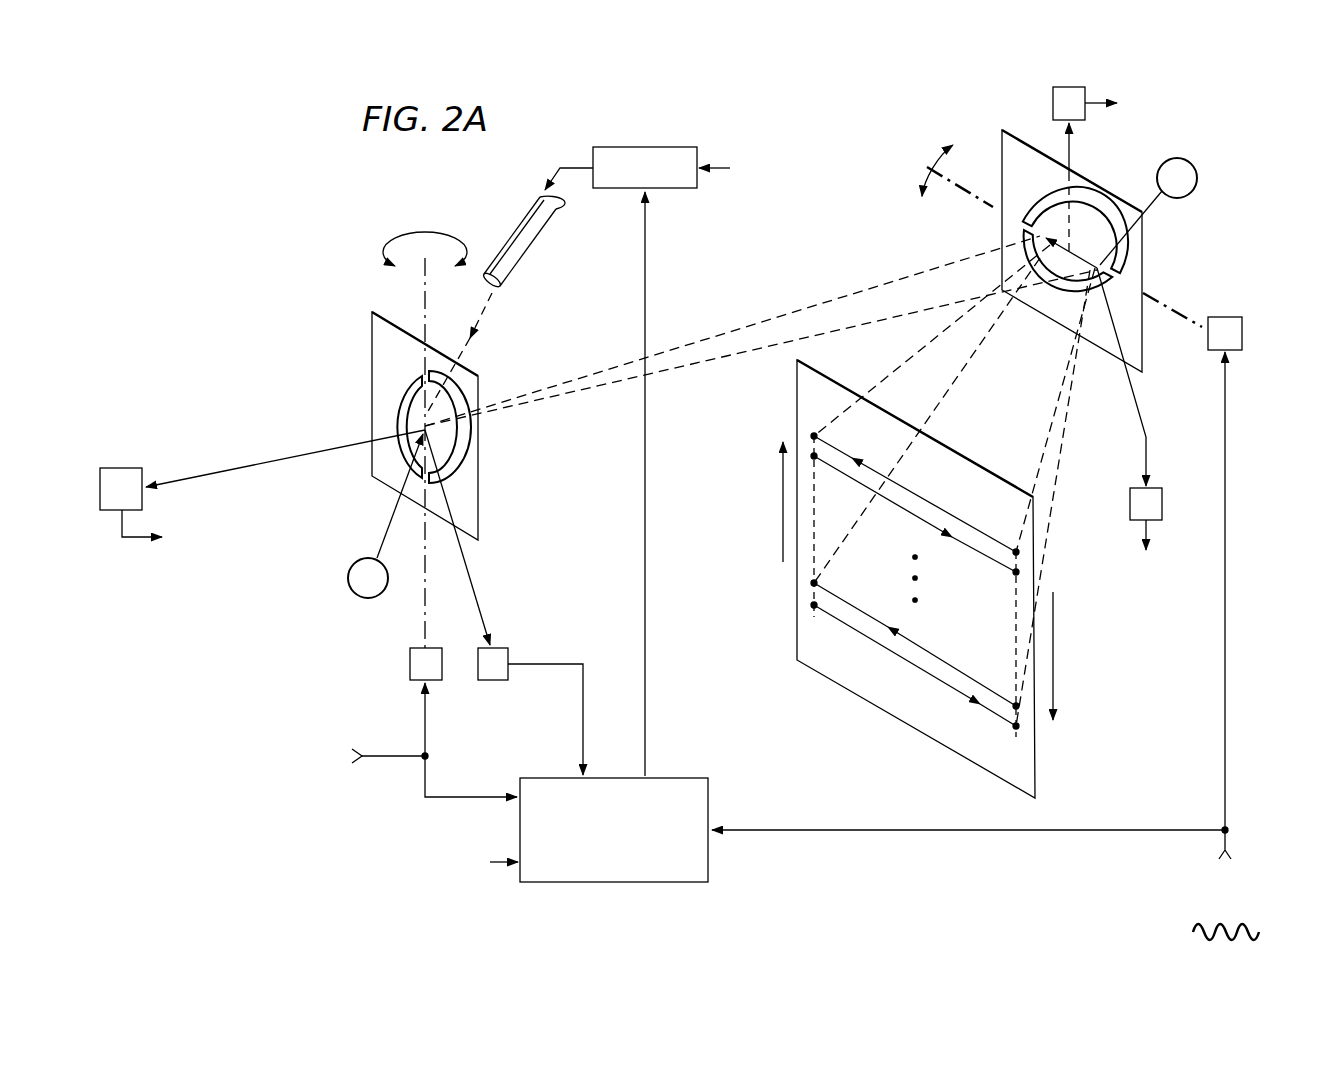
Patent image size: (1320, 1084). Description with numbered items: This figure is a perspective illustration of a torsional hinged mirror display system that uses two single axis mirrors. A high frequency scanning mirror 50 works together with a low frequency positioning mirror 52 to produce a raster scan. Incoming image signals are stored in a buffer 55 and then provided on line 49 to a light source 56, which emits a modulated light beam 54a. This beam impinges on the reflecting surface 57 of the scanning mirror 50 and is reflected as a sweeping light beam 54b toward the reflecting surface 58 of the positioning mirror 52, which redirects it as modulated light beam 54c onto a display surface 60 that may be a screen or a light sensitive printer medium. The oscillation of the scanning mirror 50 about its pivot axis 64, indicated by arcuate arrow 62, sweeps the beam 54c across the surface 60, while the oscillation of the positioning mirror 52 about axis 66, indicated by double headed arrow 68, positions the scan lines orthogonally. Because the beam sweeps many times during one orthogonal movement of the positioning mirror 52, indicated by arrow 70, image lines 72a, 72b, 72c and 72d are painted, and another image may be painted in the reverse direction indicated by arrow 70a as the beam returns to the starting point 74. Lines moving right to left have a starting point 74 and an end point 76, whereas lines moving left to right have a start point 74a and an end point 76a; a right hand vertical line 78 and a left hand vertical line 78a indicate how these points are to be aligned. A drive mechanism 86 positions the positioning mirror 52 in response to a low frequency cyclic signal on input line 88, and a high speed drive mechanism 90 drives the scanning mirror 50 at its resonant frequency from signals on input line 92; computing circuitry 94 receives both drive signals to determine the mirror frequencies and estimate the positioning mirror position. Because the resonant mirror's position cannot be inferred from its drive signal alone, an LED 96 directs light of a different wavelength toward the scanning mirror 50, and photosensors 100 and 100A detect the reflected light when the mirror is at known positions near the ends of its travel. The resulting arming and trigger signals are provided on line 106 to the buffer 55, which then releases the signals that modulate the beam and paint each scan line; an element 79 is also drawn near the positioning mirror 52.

The line 49 is at (577, 165).
The high frequency scanning single axis torsional hinged mirror 50 is at (343, 348).
The low frequency positioning single axis torsional hinged mirror 52 is at (1162, 252).
The light beam 54a is at (498, 298).
The sweeping light beam 54b is at (812, 305).
The modulated light beam 54c is at (890, 366).
The buffer 55 is at (633, 147).
The light source 56 is at (505, 233).
The reflecting surface 57 is at (405, 410).
The reflecting surface 58 is at (1095, 210).
The display surface 60 is at (880, 690).
The arcuate arrow 62 is at (403, 237).
The pivot axis 64 is at (428, 318).
The axis 66 is at (983, 205).
The double headed arrow 68 is at (935, 133).
The arrow 70 is at (1056, 672).
The arrow 70a is at (782, 485).
The image line 72a is at (920, 492).
The image line 72b is at (915, 516).
The image line 72c is at (862, 614).
The image line 72d is at (893, 655).
The starting point 74 is at (1012, 548).
The start point 74a is at (818, 460).
The end point 76 is at (820, 436).
The end point 76a is at (1012, 575).
The right hand vertical line 78 is at (1012, 612).
The left hand vertical line 78a is at (812, 566).
The low speed position sensor beam 79 is at (1052, 192).
The drive mechanism 86 is at (1243, 330).
The input line 88 is at (1227, 708).
The high speed drive mechanism 90 is at (410, 665).
The input line 92 is at (393, 752).
The computing circuitry 94 is at (605, 883).
The LED light source 96 is at (348, 578).
The photosensor 100 is at (490, 682).
The photosensor 100A is at (115, 468).
The line 106 is at (644, 513).